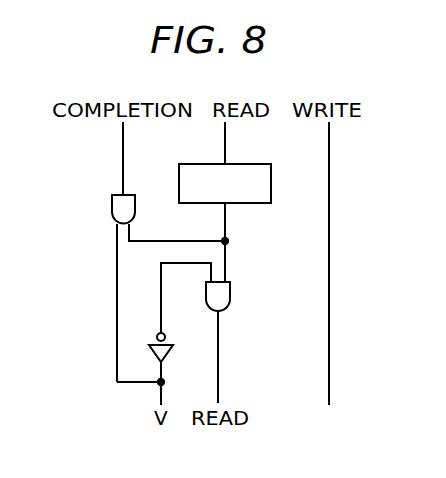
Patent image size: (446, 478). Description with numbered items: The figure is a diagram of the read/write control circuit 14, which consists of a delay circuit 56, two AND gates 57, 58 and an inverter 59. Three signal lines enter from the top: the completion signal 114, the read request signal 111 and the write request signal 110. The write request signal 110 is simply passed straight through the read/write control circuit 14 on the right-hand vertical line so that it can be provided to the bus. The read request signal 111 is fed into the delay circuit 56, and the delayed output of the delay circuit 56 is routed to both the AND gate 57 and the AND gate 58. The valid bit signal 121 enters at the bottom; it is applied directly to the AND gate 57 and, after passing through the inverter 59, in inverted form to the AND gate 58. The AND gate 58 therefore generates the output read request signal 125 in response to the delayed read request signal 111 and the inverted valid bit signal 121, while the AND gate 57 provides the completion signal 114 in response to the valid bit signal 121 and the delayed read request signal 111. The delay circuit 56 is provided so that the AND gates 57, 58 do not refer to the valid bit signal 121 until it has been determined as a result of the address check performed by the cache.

The read/write control circuit 14 is at (52, 256).
The delay circuit 56 is at (248, 204).
The AND gate 57 is at (133, 194).
The AND gate 58 is at (231, 296).
The inverter 59 is at (168, 352).
The write request signal 110 is at (330, 152).
The read request signal 111 is at (226, 152).
The completion signal 114 is at (124, 152).
The valid bit signal 121 is at (158, 390).
The read request signal 125 is at (220, 398).